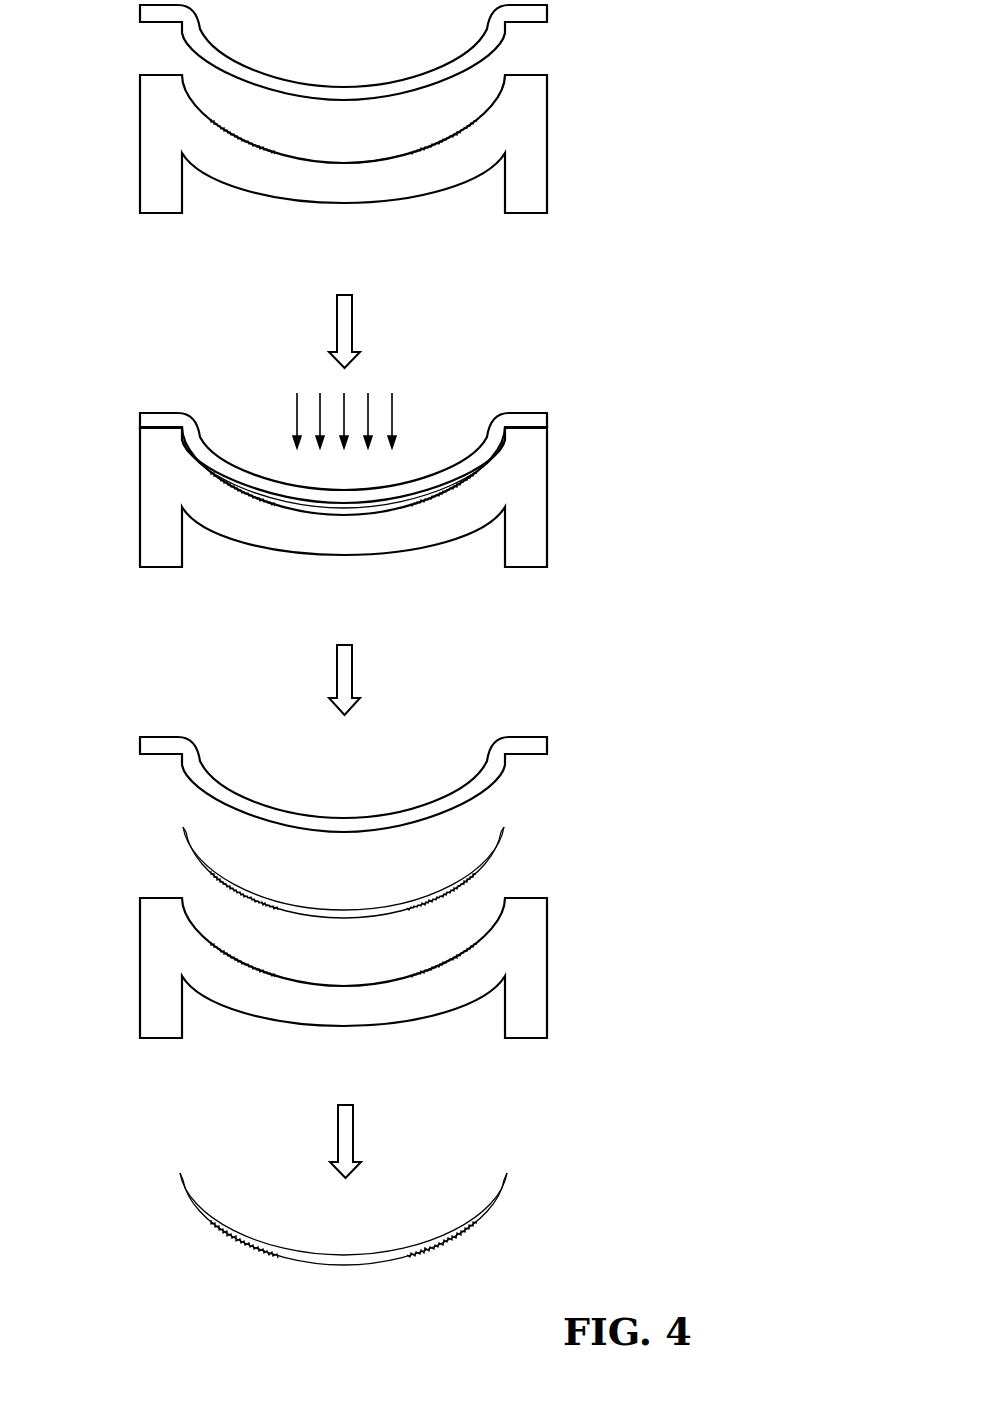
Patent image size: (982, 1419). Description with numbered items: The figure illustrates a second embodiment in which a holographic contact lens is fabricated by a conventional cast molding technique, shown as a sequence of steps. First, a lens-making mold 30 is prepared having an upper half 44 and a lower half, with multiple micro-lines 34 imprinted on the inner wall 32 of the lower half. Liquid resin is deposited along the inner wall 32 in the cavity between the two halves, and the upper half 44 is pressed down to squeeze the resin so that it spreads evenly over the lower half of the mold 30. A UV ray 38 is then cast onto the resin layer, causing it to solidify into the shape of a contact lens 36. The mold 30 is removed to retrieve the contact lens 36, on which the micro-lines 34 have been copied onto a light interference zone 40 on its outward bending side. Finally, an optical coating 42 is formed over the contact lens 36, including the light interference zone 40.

The lens-making mold 30 is at (150, 150).
The inner wall 32 is at (500, 105).
The micro-lines 34 is at (445, 133).
The contact lens 36 is at (300, 508).
The UV ray 38 is at (392, 403).
The light interference zone 40 is at (470, 885).
The optical coating 42 is at (243, 1247).
The upper half 44 is at (547, 15).